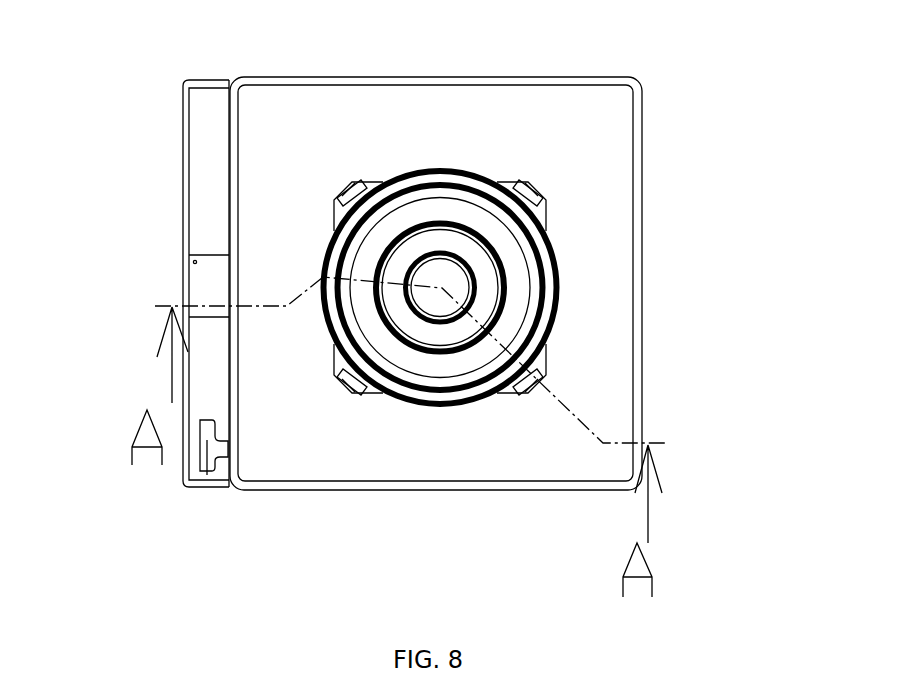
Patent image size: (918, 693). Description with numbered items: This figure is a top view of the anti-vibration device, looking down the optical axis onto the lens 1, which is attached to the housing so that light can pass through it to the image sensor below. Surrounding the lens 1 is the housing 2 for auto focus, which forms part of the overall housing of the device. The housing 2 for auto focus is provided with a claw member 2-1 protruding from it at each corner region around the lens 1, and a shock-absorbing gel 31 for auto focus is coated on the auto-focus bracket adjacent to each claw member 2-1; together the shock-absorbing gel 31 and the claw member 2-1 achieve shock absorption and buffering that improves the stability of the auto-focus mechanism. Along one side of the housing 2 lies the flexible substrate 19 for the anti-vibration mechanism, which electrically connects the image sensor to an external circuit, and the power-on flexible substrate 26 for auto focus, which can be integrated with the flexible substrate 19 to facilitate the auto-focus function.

The lens 1 is at (548, 294).
The housing for auto focus 2 is at (603, 158).
The claw member 2-1 is at (343, 187).
The flexible substrate for the anti-vibration mechanism 19 is at (197, 397).
The power-on flexible substrate for auto focus 26 is at (207, 440).
The shock-absorbing gel for auto focus 31 is at (358, 181).